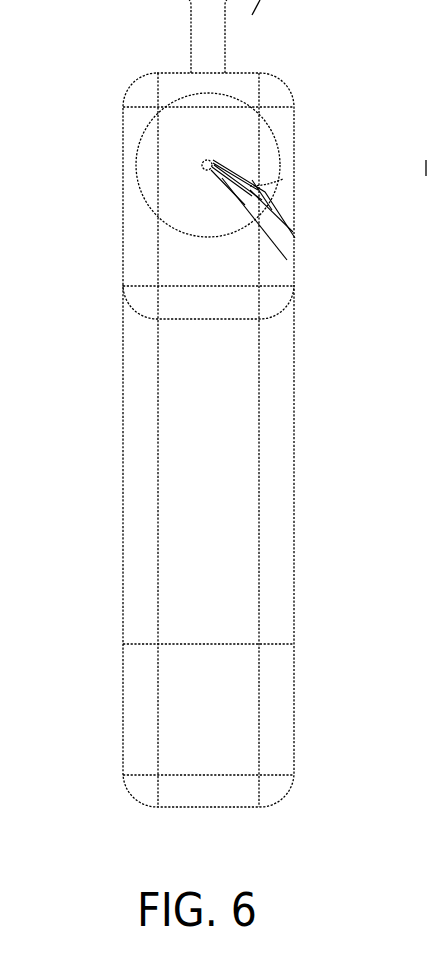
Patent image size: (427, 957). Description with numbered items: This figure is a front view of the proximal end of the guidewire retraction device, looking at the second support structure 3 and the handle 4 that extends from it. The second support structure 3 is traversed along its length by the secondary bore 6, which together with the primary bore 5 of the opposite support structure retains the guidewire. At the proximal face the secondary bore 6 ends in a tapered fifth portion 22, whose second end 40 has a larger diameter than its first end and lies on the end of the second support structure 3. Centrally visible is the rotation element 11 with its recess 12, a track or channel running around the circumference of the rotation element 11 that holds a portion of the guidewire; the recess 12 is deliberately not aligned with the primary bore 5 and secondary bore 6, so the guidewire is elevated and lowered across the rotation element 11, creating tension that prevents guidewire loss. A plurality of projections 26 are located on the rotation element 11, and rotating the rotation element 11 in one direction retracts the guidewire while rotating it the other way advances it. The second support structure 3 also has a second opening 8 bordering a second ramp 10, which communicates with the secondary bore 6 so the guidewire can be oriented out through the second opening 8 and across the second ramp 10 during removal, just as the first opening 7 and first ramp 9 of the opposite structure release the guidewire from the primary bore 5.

The second support structure 3 is at (175, 85).
The handle 4 is at (280, 610).
The primary bore 5 is at (426, 142).
The secondary bore 6 is at (215, 162).
The first opening 7 is at (426, 203).
The second opening 8 is at (272, 210).
The first ramp 9 is at (426, 318).
The second ramp 10 is at (293, 232).
The rotation element 11 is at (287, 260).
The recess 12 is at (203, 168).
The fifth portion 22 is at (148, 146).
The plurality of projections 26 is at (250, 187).
The second end 40 is at (155, 160).